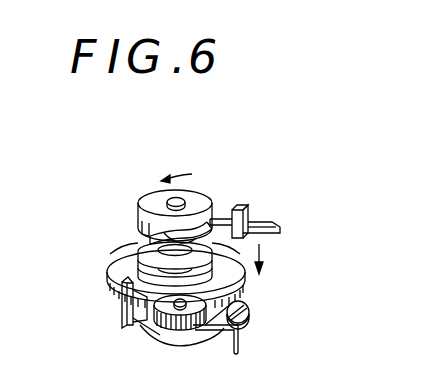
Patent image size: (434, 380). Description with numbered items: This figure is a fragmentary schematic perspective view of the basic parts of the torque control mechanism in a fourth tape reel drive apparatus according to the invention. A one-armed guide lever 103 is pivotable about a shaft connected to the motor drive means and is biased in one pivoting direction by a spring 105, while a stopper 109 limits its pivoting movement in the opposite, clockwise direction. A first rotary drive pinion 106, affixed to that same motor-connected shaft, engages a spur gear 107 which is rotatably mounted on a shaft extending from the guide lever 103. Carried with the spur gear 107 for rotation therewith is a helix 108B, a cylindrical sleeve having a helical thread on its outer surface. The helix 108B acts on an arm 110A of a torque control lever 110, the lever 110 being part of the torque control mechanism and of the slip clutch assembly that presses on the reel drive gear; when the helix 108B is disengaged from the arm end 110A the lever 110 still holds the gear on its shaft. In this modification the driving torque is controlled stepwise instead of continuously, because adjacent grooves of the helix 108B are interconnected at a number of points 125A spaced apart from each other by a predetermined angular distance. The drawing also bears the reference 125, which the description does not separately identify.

The ratchet drum 125 is at (152, 208).
The helix 108B is at (146, 236).
The points 125A is at (137, 246).
The arm 110A is at (224, 212).
The torque control lever 110 is at (260, 222).
The spur gear 107 is at (217, 279).
The first rotary drive pinion 106 is at (161, 333).
The one-armed guide lever 103 is at (120, 311).
The stopper 109 is at (250, 312).
The spring 105 is at (239, 349).